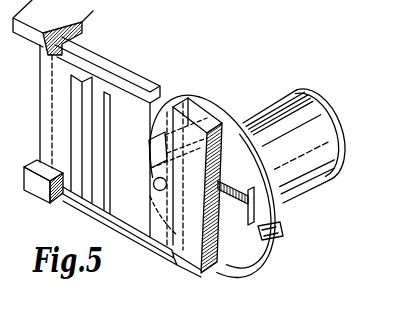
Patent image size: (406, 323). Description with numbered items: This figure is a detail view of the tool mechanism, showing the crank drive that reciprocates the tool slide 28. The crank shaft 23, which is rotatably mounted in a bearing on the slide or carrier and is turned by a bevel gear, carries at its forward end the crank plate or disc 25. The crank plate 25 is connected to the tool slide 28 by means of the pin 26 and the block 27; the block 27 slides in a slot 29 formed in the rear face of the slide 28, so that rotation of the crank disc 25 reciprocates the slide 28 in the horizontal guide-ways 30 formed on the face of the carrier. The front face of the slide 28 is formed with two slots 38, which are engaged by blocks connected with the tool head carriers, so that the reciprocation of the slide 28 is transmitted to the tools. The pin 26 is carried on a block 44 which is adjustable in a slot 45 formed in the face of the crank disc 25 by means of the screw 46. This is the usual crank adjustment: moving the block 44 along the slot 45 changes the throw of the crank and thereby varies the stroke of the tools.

The crank shaft 23 is at (313, 187).
The crank plate or disc 25 is at (248, 271).
The pin 26 is at (154, 184).
The block 27 is at (158, 192).
The tool slide 28 is at (208, 274).
The slot 29 is at (162, 107).
The horizontal guide-ways 30 is at (57, 16).
The slots 38 is at (97, 88).
The block 44 is at (181, 155).
The slot 45 is at (232, 201).
The screw 46 is at (277, 237).